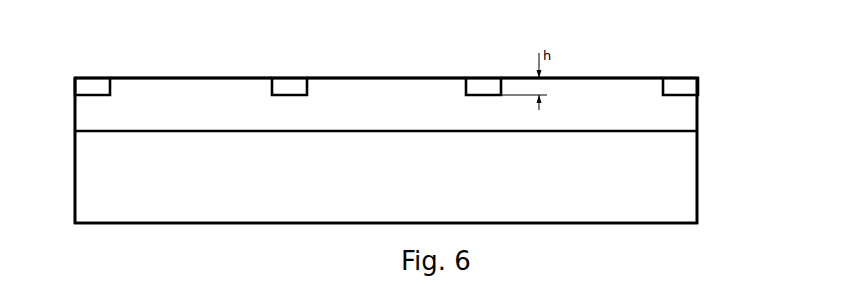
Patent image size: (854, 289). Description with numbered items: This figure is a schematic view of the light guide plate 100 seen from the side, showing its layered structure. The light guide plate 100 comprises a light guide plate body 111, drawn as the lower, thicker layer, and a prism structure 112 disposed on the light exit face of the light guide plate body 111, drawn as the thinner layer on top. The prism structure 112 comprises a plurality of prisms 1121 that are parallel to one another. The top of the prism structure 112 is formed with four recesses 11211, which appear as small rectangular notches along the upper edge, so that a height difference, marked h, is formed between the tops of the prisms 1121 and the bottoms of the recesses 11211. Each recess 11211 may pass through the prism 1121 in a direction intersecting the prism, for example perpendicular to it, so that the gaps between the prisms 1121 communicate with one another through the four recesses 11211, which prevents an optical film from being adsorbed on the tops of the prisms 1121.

The light guide plate 100 is at (752, 85).
The light guide plate body 111 is at (687, 176).
The prism structure 112 is at (698, 89).
The prism 1121 is at (193, 92).
The recess 11211 is at (291, 89).